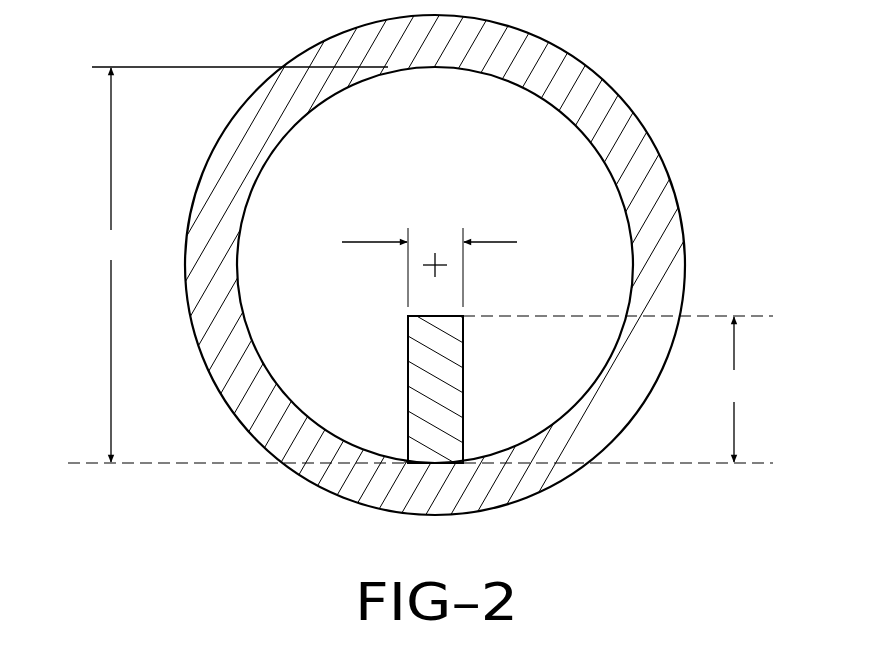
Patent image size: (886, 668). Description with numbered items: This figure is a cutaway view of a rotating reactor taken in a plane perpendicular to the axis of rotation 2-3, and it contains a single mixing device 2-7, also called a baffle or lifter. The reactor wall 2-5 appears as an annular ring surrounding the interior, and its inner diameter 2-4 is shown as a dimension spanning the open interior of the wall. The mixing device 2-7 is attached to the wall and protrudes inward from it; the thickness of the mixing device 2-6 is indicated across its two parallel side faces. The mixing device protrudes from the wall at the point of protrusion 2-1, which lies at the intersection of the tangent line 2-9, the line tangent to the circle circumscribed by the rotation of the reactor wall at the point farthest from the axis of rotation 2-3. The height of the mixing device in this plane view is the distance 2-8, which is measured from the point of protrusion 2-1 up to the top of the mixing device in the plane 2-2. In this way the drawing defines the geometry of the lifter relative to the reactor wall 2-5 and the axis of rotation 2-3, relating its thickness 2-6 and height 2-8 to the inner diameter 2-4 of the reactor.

The point of protrusion 2-1 is at (404, 456).
The top of the mixing device 2-2 is at (646, 315).
The axis of rotation 2-3 is at (443, 252).
The inner diameter 2-4 is at (235, 264).
The reactor wall 2-5 is at (606, 79).
The thickness of the mixing device 2-6 is at (458, 267).
The mixing device 2-7 is at (464, 367).
The height of the mixing device 2-8 is at (738, 389).
The tangent line 2-9 is at (420, 462).